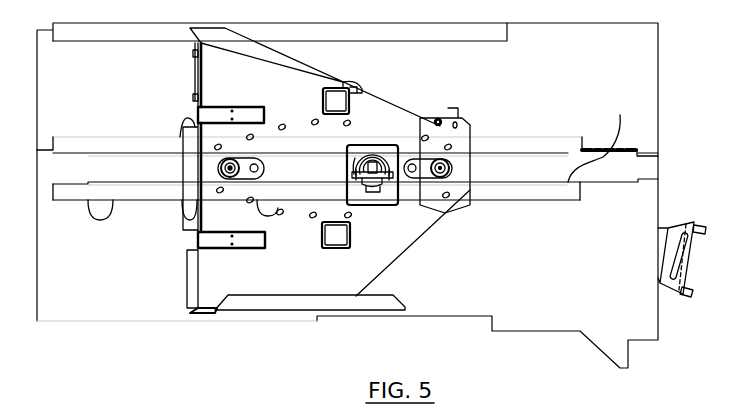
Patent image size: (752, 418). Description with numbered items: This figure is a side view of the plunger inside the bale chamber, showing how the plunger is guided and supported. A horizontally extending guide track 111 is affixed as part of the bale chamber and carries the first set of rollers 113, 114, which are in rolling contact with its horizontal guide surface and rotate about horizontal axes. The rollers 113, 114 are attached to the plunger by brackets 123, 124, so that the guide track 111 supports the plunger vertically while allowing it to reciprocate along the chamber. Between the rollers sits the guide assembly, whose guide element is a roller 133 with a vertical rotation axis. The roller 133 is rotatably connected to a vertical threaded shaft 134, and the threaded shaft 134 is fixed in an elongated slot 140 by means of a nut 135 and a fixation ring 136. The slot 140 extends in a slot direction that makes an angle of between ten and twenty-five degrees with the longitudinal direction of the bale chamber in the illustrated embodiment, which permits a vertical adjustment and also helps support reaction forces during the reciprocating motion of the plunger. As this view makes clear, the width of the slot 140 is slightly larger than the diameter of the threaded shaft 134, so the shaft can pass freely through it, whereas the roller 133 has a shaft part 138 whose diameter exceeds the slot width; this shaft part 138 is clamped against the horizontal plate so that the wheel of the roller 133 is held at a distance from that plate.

The guide track 111 is at (568, 157).
The roller 113 is at (228, 176).
The roller 114 is at (450, 176).
The bracket 123 is at (253, 173).
The bracket 124 is at (427, 174).
The roller 133 is at (373, 187).
The threaded shaft 134 is at (373, 167).
The nut 135 is at (362, 153).
The fixation ring 136 is at (377, 166).
The shaft part 138 is at (365, 179).
The slot 140 is at (362, 174).